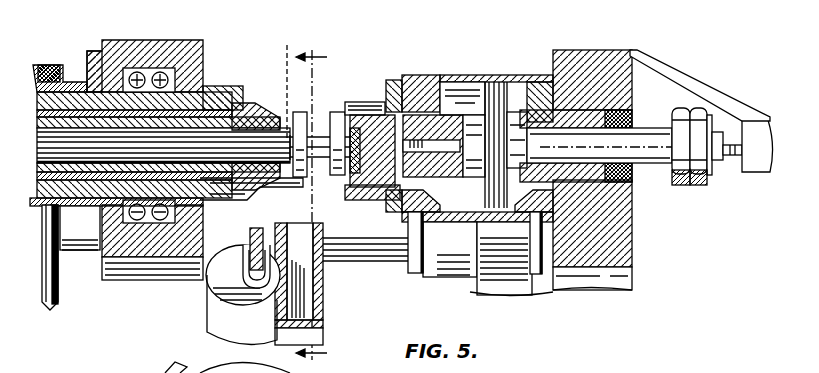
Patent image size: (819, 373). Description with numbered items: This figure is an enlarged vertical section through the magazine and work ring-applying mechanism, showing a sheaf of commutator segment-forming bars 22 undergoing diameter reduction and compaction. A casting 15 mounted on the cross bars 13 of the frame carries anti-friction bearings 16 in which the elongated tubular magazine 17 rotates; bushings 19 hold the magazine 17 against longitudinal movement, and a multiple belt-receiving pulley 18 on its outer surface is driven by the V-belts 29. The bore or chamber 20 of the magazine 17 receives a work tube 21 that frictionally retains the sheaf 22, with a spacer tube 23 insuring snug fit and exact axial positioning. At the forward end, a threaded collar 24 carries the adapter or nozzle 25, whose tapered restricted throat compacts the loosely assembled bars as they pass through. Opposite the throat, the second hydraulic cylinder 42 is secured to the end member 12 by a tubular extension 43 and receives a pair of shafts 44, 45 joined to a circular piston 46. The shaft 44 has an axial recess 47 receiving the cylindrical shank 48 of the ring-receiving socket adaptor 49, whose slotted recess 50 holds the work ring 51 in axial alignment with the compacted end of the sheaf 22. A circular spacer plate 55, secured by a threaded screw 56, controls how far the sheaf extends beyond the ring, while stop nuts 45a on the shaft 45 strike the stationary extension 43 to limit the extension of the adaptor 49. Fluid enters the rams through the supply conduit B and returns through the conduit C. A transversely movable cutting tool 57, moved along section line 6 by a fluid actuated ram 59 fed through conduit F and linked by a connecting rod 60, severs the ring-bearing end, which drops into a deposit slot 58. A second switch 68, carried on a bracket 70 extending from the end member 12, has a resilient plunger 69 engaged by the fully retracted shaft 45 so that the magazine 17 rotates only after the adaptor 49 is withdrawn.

The end member 12 is at (612, 248).
The cross bars 13 is at (376, 262).
The casting 15 is at (180, 48).
The anti-friction bearings 16 is at (160, 72).
The tubular magazine 17 is at (80, 215).
The multiple belt-receiving pulley 18 is at (60, 63).
The bushings 19 is at (95, 50).
The bore or chamber 20 is at (38, 98).
The work tube 21 is at (38, 123).
The sheaf of commutator segment-forming bars 22 is at (45, 150).
The spacer tube 23 is at (38, 114).
The threaded collar 24 is at (225, 86).
The adapter or nozzle 25 is at (250, 104).
The V-belts 29 is at (45, 290).
The second hydraulic cylinder 42 is at (470, 75).
The tubular extension 43 is at (632, 112).
The shaft 44 is at (394, 82).
The shaft 45 is at (664, 165).
The stop nuts 45a is at (685, 187).
The circular piston 46 is at (500, 80).
The axial recess 47 is at (432, 168).
The cylindrical shank 48 is at (408, 115).
The ring-receiving socket adaptor 49 is at (358, 102).
The slotted recess 50 is at (337, 112).
The work ring 51 is at (298, 112).
The circular spacer plate 55 is at (355, 195).
The threaded screw 56 is at (370, 118).
The cutting tool 57 is at (293, 81).
The deposit slot 58 is at (303, 295).
The fluid actuated ram 59 is at (215, 290).
The connecting rod 60 is at (250, 235).
The second switch 68 is at (757, 165).
The resilient plunger 69 is at (733, 157).
The bracket 70 is at (700, 97).
The section line 6 is at (311, 200).
The supply conduit B is at (540, 272).
The return conduit C is at (418, 270).
The conduit F is at (250, 346).